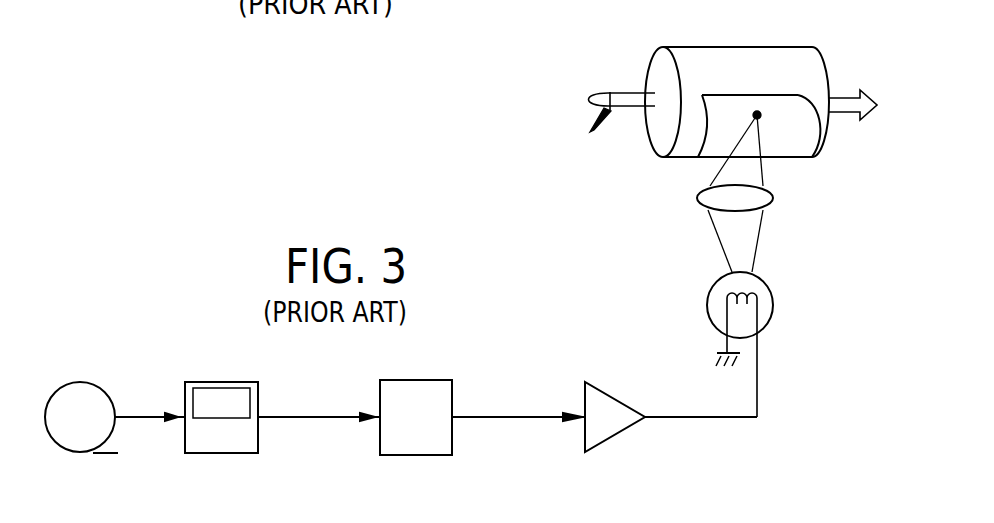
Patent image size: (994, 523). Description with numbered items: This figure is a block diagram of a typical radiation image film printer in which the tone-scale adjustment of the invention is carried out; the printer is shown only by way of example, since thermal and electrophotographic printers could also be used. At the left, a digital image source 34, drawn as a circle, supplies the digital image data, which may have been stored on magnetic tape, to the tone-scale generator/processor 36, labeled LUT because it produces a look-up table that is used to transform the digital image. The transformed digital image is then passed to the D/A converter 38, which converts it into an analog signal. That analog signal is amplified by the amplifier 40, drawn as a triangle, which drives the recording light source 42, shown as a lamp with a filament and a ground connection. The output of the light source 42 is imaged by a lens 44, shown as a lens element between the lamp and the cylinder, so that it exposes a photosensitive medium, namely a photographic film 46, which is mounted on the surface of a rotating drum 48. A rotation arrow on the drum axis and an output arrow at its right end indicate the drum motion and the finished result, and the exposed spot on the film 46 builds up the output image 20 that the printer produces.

The output image 20 is at (780, 143).
The image signal source 34 is at (88, 395).
The tone-scale generator/processor 36 is at (230, 382).
The digital-to-analog converter 38 is at (450, 380).
The amplifier 40 is at (620, 414).
The recording light source 42 is at (772, 292).
The lens 44 is at (767, 200).
The photographic film 46 is at (787, 108).
The drum 48 is at (800, 62).